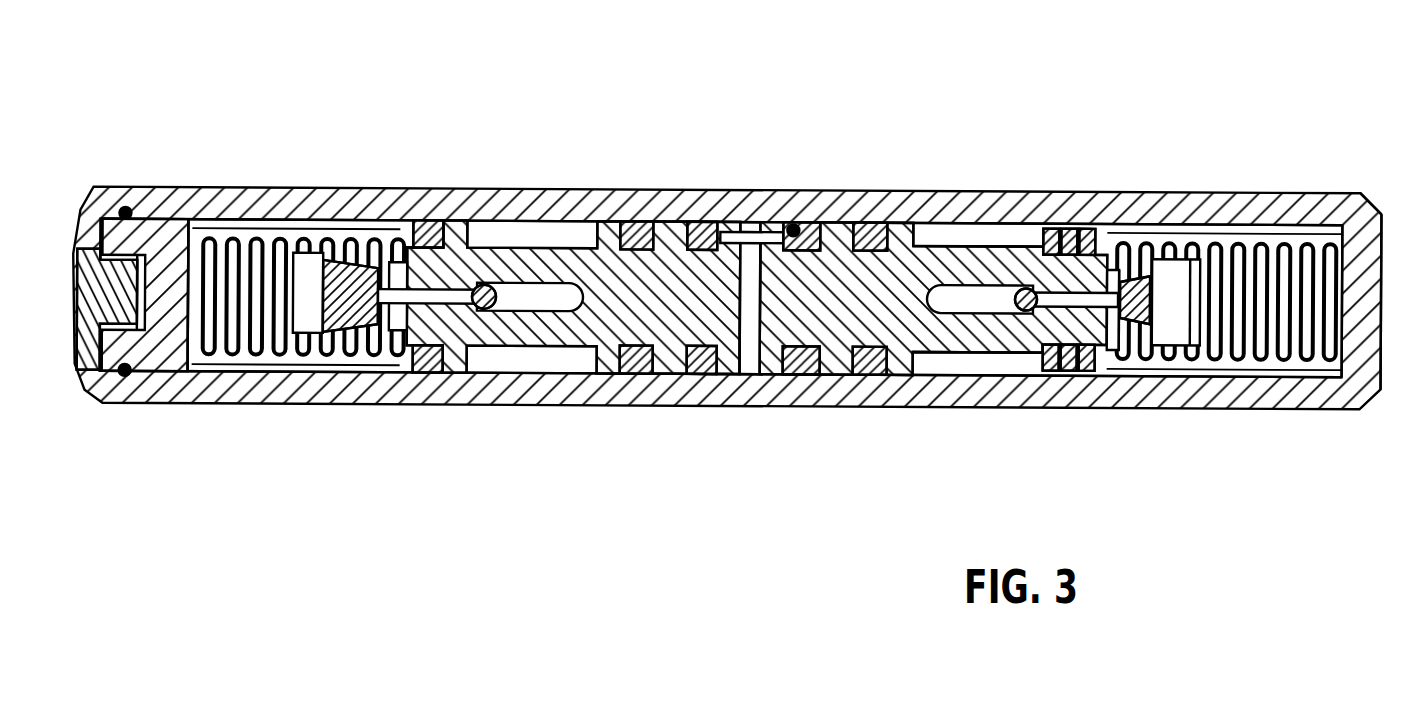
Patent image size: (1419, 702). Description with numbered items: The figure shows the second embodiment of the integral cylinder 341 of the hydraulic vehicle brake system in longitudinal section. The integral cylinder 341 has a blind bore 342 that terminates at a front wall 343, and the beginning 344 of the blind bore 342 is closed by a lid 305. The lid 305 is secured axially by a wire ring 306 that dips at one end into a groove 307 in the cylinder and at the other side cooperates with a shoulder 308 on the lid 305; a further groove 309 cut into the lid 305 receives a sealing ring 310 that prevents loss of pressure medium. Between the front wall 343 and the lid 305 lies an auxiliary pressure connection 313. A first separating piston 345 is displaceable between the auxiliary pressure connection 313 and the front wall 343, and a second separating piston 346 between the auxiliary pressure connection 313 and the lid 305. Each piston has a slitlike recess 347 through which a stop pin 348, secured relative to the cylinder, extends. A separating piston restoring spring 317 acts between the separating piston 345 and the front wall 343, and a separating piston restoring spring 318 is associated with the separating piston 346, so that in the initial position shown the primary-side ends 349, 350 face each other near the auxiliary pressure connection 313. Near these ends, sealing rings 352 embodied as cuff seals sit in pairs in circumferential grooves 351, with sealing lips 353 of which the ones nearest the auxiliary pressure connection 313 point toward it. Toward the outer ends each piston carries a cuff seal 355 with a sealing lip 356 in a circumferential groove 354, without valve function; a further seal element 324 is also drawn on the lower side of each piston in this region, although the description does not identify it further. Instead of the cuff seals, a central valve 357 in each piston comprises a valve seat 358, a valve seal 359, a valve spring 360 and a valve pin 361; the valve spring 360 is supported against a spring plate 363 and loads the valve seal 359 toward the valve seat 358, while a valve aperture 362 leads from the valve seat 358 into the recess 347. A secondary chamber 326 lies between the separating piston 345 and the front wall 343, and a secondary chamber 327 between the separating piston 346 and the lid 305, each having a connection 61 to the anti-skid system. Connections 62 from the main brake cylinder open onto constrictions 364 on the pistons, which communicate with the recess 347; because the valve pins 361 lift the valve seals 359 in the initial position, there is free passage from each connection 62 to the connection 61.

The integral cylinder 341 is at (830, 146).
The front wall 343 is at (1363, 200).
The spring plate 363 is at (1393, 382).
The connection 61 is at (236, 218).
The connection 62 is at (483, 200).
The beginning of the blind bore 344 is at (113, 406).
The sealing ring 310 is at (174, 205).
The shoulder 308 is at (142, 225).
The lid 305 is at (79, 235).
The groove 307 is at (122, 208).
The wire ring 306 is at (130, 384).
The groove 309 is at (196, 222).
The secondary chamber 327 is at (273, 235).
The secondary chamber 326 is at (1250, 350).
The valve seal 359 is at (368, 255).
The separating piston restoring spring 318 is at (323, 260).
The valve spring 360 is at (1190, 262).
The central valve 357 is at (395, 368).
The blind bore 342 is at (1216, 374).
The separating piston restoring spring 317 is at (1240, 226).
The second separating piston 346 is at (533, 345).
The primary-side end 349 is at (778, 372).
The constriction 364 is at (928, 224).
The first separating piston 345 is at (958, 332).
The slitlike recess 347 is at (567, 300).
The stop pin 348 is at (488, 300).
The valve aperture 362 is at (472, 286).
The auxiliary pressure connection 313 is at (752, 232).
The primary-side end 350 is at (722, 374).
The sealing lip 356 is at (428, 222).
The circumferential groove 354 is at (1072, 227).
The cuff seal 355 is at (1052, 227).
The lower piston seal 324 is at (430, 374).
The sealing ring 352 is at (640, 374).
The circumferential groove 351 is at (805, 374).
The sealing lip 353 is at (801, 224).
The valve pin 361 is at (1058, 370).
The valve seat 358 is at (1072, 370).